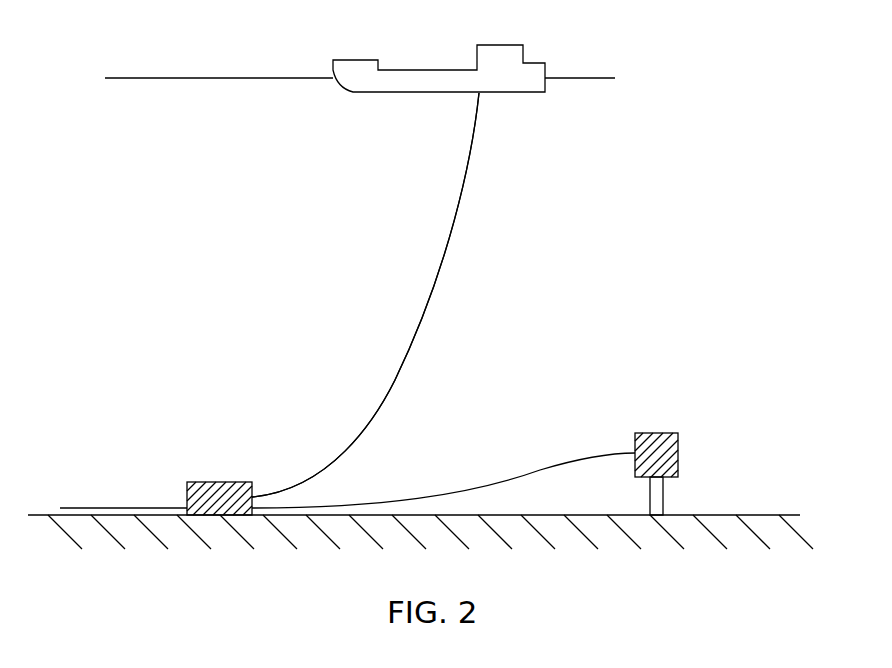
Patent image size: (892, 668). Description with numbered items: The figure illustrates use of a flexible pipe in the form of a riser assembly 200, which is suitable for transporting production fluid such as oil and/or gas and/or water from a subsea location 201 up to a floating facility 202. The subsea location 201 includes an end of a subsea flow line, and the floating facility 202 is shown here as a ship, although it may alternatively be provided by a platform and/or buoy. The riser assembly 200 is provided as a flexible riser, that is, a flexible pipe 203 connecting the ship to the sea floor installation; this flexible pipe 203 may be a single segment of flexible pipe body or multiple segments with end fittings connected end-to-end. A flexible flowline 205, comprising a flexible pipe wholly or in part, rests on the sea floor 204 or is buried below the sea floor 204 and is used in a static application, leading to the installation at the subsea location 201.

The riser assembly 200 is at (495, 171).
The subsea location 201 is at (218, 482).
The floating facility 202 is at (355, 58).
The flexible pipe 203 is at (410, 345).
The sea floor 204 is at (742, 515).
The flexible flowline 205 is at (118, 508).